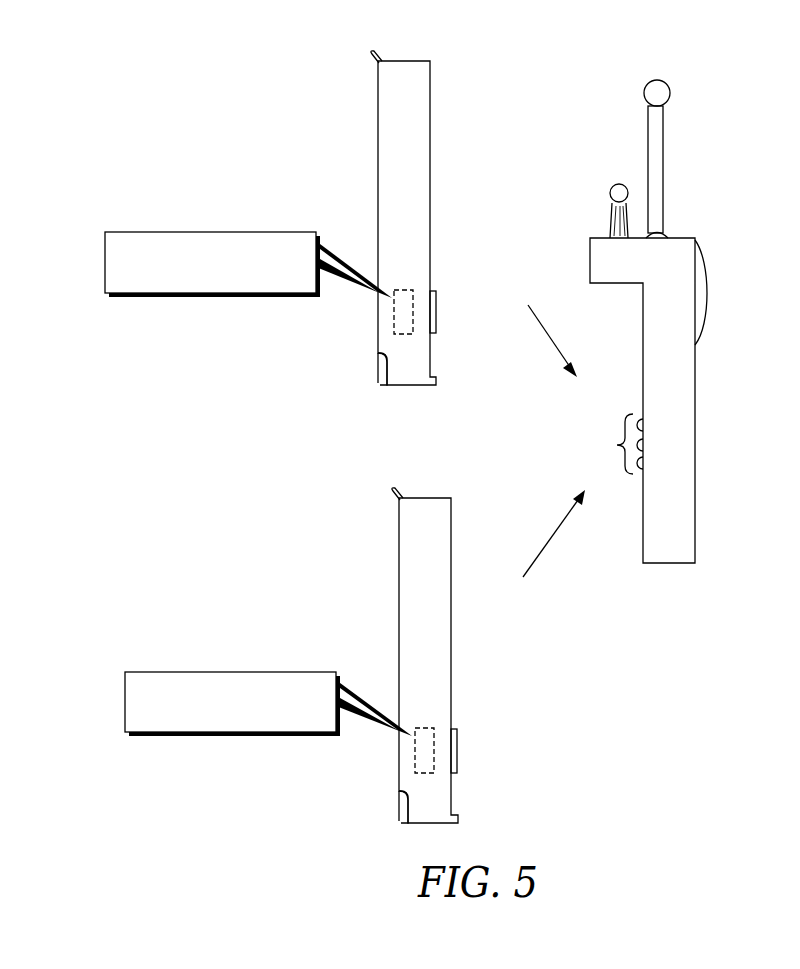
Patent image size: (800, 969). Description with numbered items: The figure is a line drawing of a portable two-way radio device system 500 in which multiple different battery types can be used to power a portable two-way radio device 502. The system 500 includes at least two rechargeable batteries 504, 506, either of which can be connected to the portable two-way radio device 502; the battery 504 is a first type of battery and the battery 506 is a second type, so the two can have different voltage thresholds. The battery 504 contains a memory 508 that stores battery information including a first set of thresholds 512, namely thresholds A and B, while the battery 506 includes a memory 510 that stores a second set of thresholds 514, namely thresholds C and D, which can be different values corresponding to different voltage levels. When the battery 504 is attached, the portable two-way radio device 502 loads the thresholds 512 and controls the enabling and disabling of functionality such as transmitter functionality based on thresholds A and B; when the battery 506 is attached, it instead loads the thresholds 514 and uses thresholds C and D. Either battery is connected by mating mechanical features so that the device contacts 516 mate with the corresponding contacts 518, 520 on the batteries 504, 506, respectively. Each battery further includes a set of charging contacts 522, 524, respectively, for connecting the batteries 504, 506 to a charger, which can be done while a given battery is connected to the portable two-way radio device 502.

The portable two-way radio device system 500 is at (167, 95).
The portable two-way radio device 502 is at (708, 293).
The battery 504 is at (430, 117).
The battery 506 is at (451, 555).
The memory 508 is at (404, 290).
The memory 510 is at (423, 728).
The first set of thresholds 512 is at (212, 232).
The second set of thresholds 514 is at (232, 672).
The device contacts 516 is at (617, 445).
The contacts 518 is at (436, 310).
The contacts 520 is at (457, 748).
The charging contacts 522 is at (385, 370).
The charging contacts 524 is at (400, 812).